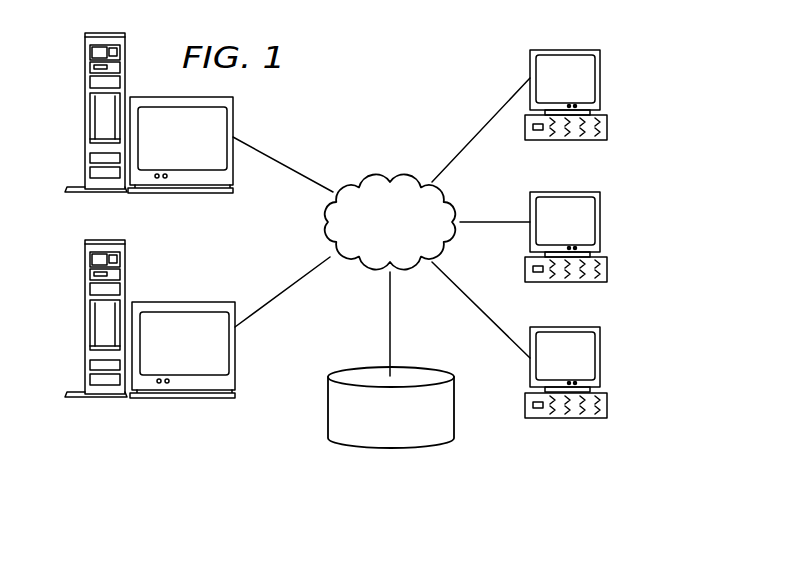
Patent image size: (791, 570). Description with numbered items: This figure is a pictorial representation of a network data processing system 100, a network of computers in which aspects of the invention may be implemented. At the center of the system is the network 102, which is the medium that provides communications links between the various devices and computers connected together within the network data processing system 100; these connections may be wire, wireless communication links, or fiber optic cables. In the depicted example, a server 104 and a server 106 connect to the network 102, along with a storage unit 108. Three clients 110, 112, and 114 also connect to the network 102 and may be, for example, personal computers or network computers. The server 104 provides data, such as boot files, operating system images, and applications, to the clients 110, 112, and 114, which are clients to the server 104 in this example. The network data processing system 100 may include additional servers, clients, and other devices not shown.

The network data processing system 100 is at (440, 58).
The network 102 is at (362, 174).
The server 104 is at (85, 113).
The server 106 is at (85, 318).
The storage unit 108 is at (375, 448).
The client 110 is at (603, 78).
The client 112 is at (603, 212).
The client 114 is at (603, 360).